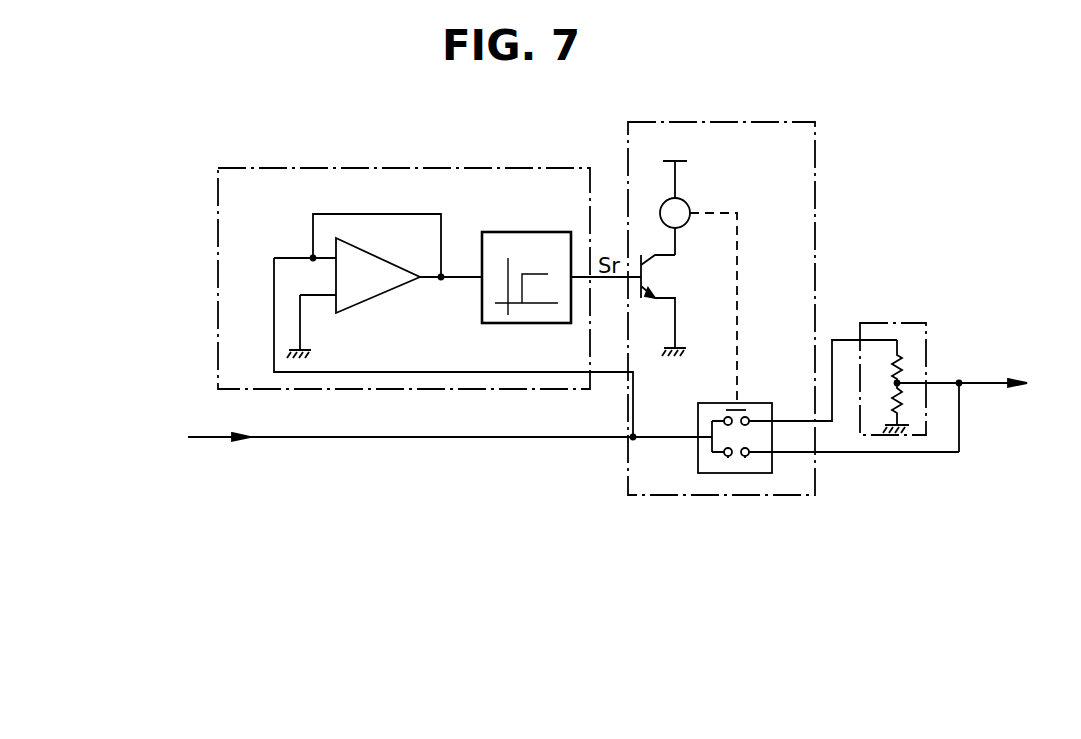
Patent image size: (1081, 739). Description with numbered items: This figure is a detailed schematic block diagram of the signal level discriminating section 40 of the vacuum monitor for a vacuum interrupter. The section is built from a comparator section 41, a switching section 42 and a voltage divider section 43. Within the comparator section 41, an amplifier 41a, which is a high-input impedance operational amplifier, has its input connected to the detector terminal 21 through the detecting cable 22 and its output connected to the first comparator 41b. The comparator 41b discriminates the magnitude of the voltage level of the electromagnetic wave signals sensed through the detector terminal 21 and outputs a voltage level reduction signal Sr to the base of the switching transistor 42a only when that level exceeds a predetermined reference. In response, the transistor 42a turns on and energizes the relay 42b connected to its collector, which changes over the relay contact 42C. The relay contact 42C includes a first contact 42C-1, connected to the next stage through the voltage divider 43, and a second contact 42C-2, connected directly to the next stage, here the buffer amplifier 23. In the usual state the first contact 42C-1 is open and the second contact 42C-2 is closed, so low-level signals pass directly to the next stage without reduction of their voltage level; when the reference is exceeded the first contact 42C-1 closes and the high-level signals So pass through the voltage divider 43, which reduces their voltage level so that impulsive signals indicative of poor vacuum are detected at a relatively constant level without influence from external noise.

The signal level discriminating section 40 is at (640, 109).
The comparator section 41 is at (352, 168).
The amplifier 41a is at (392, 266).
The first comparator 41b is at (523, 232).
The switching section 42 is at (752, 122).
The switching transistor 42a is at (647, 273).
The relay 42b is at (688, 201).
The relay contact 42C is at (758, 403).
The first contact 42C-1 is at (729, 409).
The second contact 42C-2 is at (732, 458).
The voltage divider section 43 is at (897, 322).
The detector terminal 21 is at (180, 415).
The detecting cable 22 is at (403, 437).
The buffer amplifier 23 is at (986, 402).